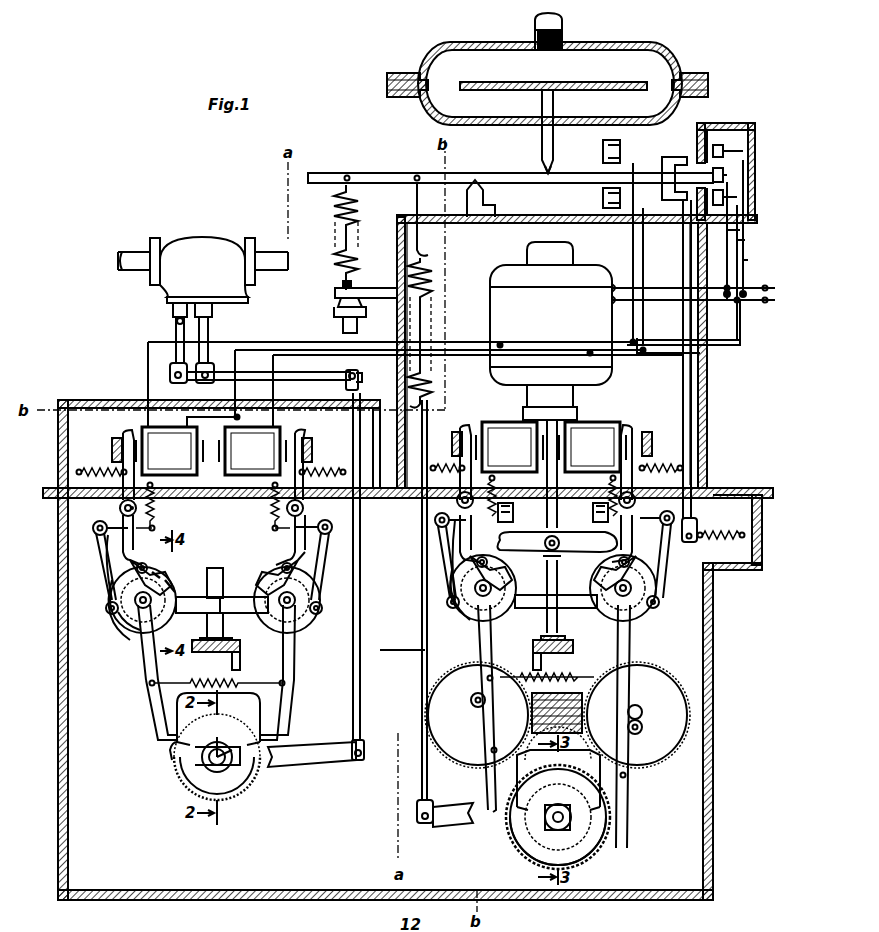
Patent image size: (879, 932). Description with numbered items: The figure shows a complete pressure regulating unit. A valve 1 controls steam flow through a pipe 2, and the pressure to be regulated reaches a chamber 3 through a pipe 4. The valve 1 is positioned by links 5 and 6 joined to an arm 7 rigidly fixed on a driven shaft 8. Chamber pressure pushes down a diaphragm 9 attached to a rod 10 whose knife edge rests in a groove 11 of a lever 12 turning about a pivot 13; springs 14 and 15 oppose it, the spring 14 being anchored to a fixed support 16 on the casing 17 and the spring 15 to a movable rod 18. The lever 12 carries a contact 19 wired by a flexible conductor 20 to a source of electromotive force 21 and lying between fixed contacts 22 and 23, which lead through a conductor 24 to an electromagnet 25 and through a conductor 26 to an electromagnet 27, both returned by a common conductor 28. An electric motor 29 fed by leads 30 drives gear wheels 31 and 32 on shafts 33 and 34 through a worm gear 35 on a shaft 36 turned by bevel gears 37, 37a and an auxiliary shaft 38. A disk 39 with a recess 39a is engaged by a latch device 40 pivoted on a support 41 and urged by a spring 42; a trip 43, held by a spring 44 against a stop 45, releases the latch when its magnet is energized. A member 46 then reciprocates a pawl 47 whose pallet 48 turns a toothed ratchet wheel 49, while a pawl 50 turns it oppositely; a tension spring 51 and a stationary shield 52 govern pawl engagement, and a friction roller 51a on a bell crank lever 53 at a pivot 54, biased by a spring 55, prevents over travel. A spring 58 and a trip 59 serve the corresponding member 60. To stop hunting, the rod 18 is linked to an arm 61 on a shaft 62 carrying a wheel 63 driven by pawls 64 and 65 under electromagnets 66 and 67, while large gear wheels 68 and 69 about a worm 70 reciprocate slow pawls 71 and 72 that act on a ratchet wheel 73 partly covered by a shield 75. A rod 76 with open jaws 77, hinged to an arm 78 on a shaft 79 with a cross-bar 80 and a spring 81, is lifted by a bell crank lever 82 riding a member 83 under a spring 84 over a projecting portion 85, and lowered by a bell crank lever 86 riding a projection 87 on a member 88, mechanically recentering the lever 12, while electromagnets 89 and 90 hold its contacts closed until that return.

The valve 1 is at (203, 270).
The pipe 2 is at (258, 250).
The chamber 3 is at (547, 83).
The pipe 4 is at (562, 28).
The link 5 is at (300, 370).
The link 6 is at (372, 548).
The arm 7 is at (300, 766).
The driven shaft 8 is at (208, 762).
The diaphragm 9 is at (643, 82).
The rod 10 is at (553, 142).
The groove 11 is at (551, 170).
The lever 12 is at (467, 175).
The pivot 13 is at (483, 196).
The spring 14 is at (335, 233).
The spring 15 is at (431, 312).
The fixed support 16 is at (335, 294).
The casing 17 is at (397, 250).
The rod 18 is at (450, 592).
The electrical contact 19 is at (723, 172).
The flexible conductor 20 is at (745, 240).
The source of electromotive force 21 is at (777, 291).
The fixed contact 22 is at (723, 195).
The fixed contact 23 is at (745, 125).
The conductor 24 is at (740, 230).
The electromagnet 25 is at (169, 451).
The conductor 26 is at (748, 260).
The electromagnet 27 is at (252, 451).
The common conductor 28 is at (740, 335).
The electric motor 29 is at (551, 385).
The leads 30 is at (655, 300).
The gear wheel 31 is at (122, 638).
The gear wheel 32 is at (320, 620).
The shaft 33 is at (178, 614).
The shaft 34 is at (258, 614).
The worm gear 35 is at (230, 595).
The shaft 36 is at (230, 570).
The bevel gear 37 is at (222, 655).
The bevel gear 37a is at (573, 648).
The auxiliary shaft 38 is at (380, 655).
The disk 39 is at (135, 640).
The recess 39a is at (176, 590).
The latch device 40 is at (150, 565).
The support 41 is at (106, 603).
The spring 42 is at (165, 575).
The trip 43 is at (122, 552).
The spring 44 is at (88, 470).
The stop 45 is at (106, 575).
The member 46 is at (110, 628).
The pawl 47 is at (145, 677).
The pallet 48 is at (168, 757).
The toothed ratchet wheel 49 is at (240, 792).
The pawl 50 is at (290, 700).
The tension spring 51 is at (200, 680).
The friction roller 51a is at (110, 594).
The stationary shield 52 is at (175, 722).
The bell crank lever 53 is at (95, 540).
The pivot 54 is at (100, 522).
The spring 55 is at (160, 510).
The spring 58 is at (323, 465).
The trip 59 is at (300, 542).
The member 60 is at (300, 640).
The arm 61 is at (455, 820).
The shaft 62 is at (565, 822).
The wheel 63 is at (540, 860).
The pawl 64 is at (478, 695).
The pawl 65 is at (630, 690).
The electromagnet 66 is at (509, 447).
The electromagnet 67 is at (592, 447).
The gear wheel 68 is at (478, 715).
The gear wheel 69 is at (637, 715).
The worm 70 is at (570, 708).
The pawl 71 is at (487, 783).
The pawl 72 is at (627, 805).
The ratchet wheel 73 is at (595, 860).
The shield 75 is at (515, 835).
The rod 76 is at (707, 430).
The open jaws 77 is at (686, 140).
The arm 78 is at (712, 572).
The shaft 79 is at (560, 530).
The cross-bar 80 is at (528, 538).
The spring 81 is at (722, 530).
The bell crank lever 82 is at (448, 538).
The member 83 is at (447, 612).
The spring 84 is at (490, 500).
The projecting portion 85 is at (465, 582).
The bell crank lever 86 is at (665, 580).
The projection 87 is at (660, 605).
The member 88 is at (657, 615).
The electromagnet 89 is at (603, 198).
The electromagnet 90 is at (620, 142).